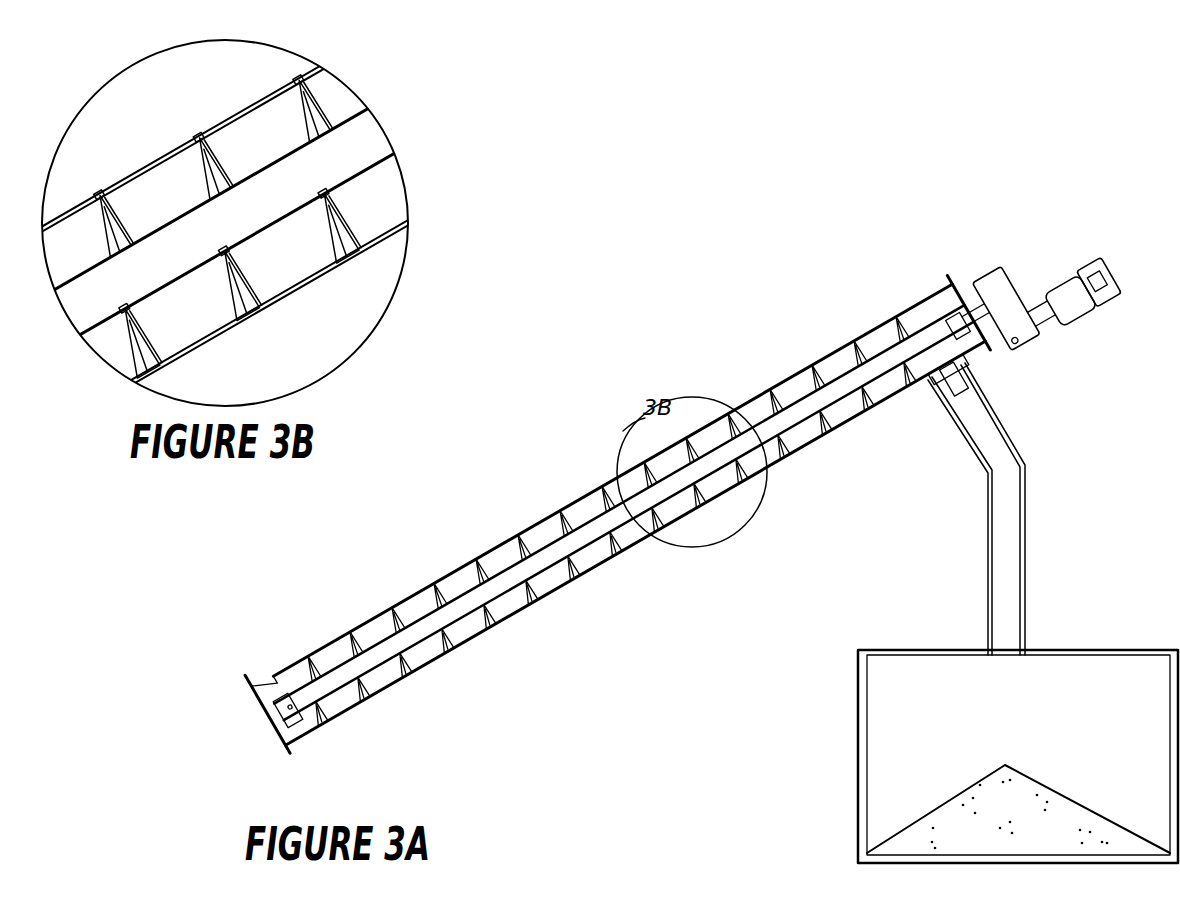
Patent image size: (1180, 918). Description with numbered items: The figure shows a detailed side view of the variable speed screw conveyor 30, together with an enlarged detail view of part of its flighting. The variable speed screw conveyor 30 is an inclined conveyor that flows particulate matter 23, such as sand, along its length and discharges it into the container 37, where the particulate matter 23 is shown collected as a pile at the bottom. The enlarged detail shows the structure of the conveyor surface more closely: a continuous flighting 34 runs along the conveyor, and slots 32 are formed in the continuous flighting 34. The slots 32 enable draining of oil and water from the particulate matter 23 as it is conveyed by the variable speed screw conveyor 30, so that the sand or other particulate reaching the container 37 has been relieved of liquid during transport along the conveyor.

In FIG. 3A, the variable speed screw conveyor 30 is at (816, 347).
In FIG. 3B, the slots 32 is at (107, 228).
In FIG. 3B, the continuous flighting 34 is at (97, 201).
In FIG. 3A, the container 37 is at (858, 735).
In FIG. 3A, the particulate matter 23 is at (934, 808).